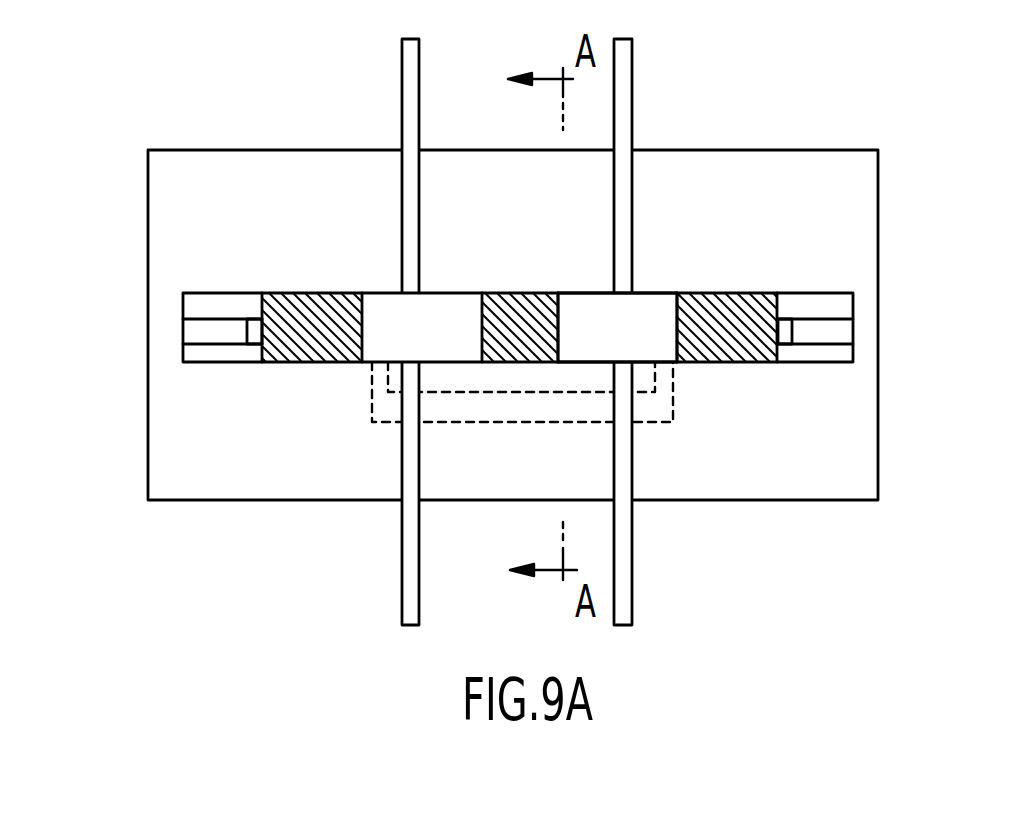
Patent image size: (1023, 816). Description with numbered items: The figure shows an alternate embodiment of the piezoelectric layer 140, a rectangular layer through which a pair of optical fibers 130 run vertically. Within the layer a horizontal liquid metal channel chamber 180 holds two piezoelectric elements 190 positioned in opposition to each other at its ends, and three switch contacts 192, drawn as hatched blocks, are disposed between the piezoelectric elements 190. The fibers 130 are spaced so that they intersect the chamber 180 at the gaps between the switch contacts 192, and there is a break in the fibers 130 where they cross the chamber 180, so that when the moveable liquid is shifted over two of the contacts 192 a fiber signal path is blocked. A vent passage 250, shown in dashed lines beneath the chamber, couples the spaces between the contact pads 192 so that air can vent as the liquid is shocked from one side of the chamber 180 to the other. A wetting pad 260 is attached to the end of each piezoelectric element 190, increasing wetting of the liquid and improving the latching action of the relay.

The optical fibers 130 is at (419, 118).
The piezoelectric layer 140 is at (878, 222).
The chamber 180 is at (661, 305).
The piezoelectric elements 190 is at (195, 331).
The switch contacts 192 is at (302, 307).
The vent passage 250 is at (663, 422).
The wetting pad 260 is at (255, 332).